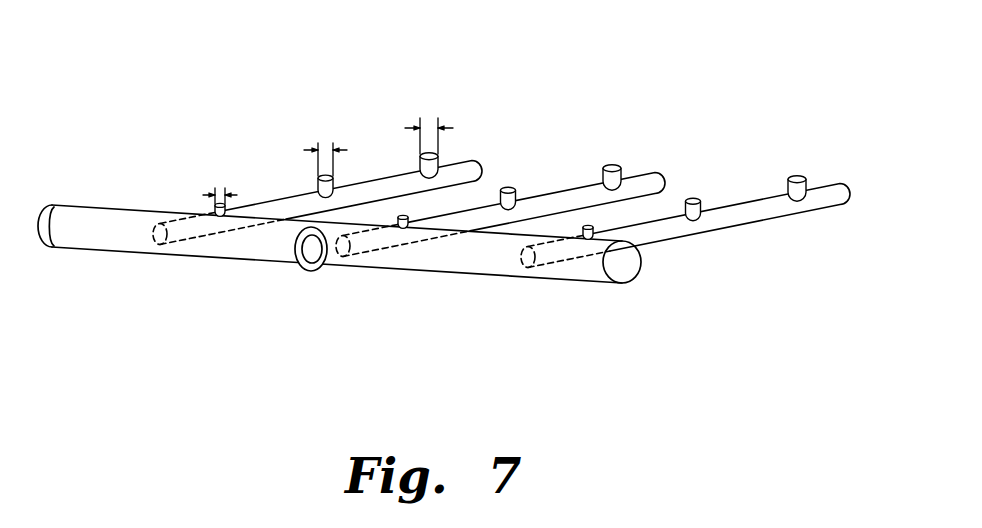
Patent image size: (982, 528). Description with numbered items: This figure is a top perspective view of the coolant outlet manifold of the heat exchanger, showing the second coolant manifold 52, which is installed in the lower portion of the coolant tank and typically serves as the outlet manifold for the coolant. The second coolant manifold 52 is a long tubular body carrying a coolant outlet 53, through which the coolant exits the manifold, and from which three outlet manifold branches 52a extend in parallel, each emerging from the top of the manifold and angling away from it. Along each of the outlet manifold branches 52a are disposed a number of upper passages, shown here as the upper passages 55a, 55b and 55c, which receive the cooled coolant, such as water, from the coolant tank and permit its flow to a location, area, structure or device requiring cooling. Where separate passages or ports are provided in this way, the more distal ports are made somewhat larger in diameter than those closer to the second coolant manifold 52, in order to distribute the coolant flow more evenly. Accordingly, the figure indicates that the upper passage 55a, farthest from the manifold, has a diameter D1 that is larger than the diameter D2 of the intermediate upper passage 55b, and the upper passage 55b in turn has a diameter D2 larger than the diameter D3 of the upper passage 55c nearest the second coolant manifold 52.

The second coolant manifold 52 is at (78, 249).
The outlet manifold branches 52a is at (478, 157).
The coolant outlet 53 is at (302, 273).
The upper passage 55a is at (808, 214).
The upper passage 55b is at (700, 233).
The upper passage 55c is at (597, 241).
The diameter of upper passage 55a D1 is at (406, 128).
The diameter of upper passage 55b D2 is at (304, 150).
The diameter of upper passage 55c D3 is at (203, 195).